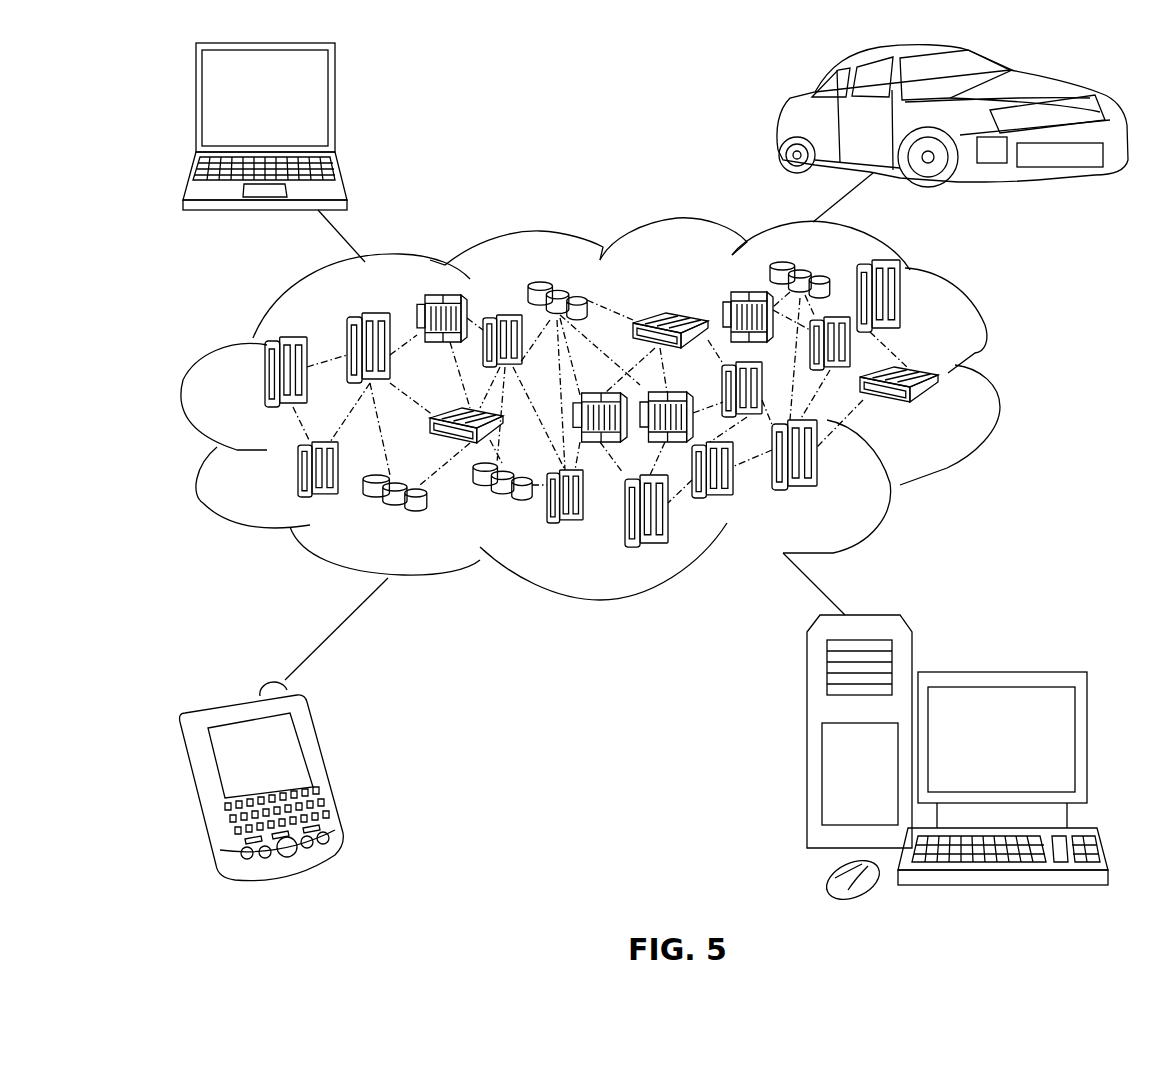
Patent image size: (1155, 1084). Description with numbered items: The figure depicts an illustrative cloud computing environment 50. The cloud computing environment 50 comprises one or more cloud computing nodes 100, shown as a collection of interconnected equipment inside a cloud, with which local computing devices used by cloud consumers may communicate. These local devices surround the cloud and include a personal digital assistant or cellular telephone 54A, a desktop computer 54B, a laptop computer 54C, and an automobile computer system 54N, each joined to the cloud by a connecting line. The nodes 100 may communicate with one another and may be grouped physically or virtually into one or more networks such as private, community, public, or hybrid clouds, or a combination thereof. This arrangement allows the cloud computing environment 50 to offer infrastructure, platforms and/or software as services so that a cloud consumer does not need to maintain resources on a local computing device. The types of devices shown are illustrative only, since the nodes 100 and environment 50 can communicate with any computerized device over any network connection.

The cloud computing environment 50 is at (998, 382).
The cloud computing nodes 100 is at (940, 410).
The personal digital assistant or cellular telephone 54A is at (323, 770).
The desktop computer 54B is at (1000, 672).
The laptop computer 54C is at (335, 103).
The automobile computer system 54N is at (776, 120).